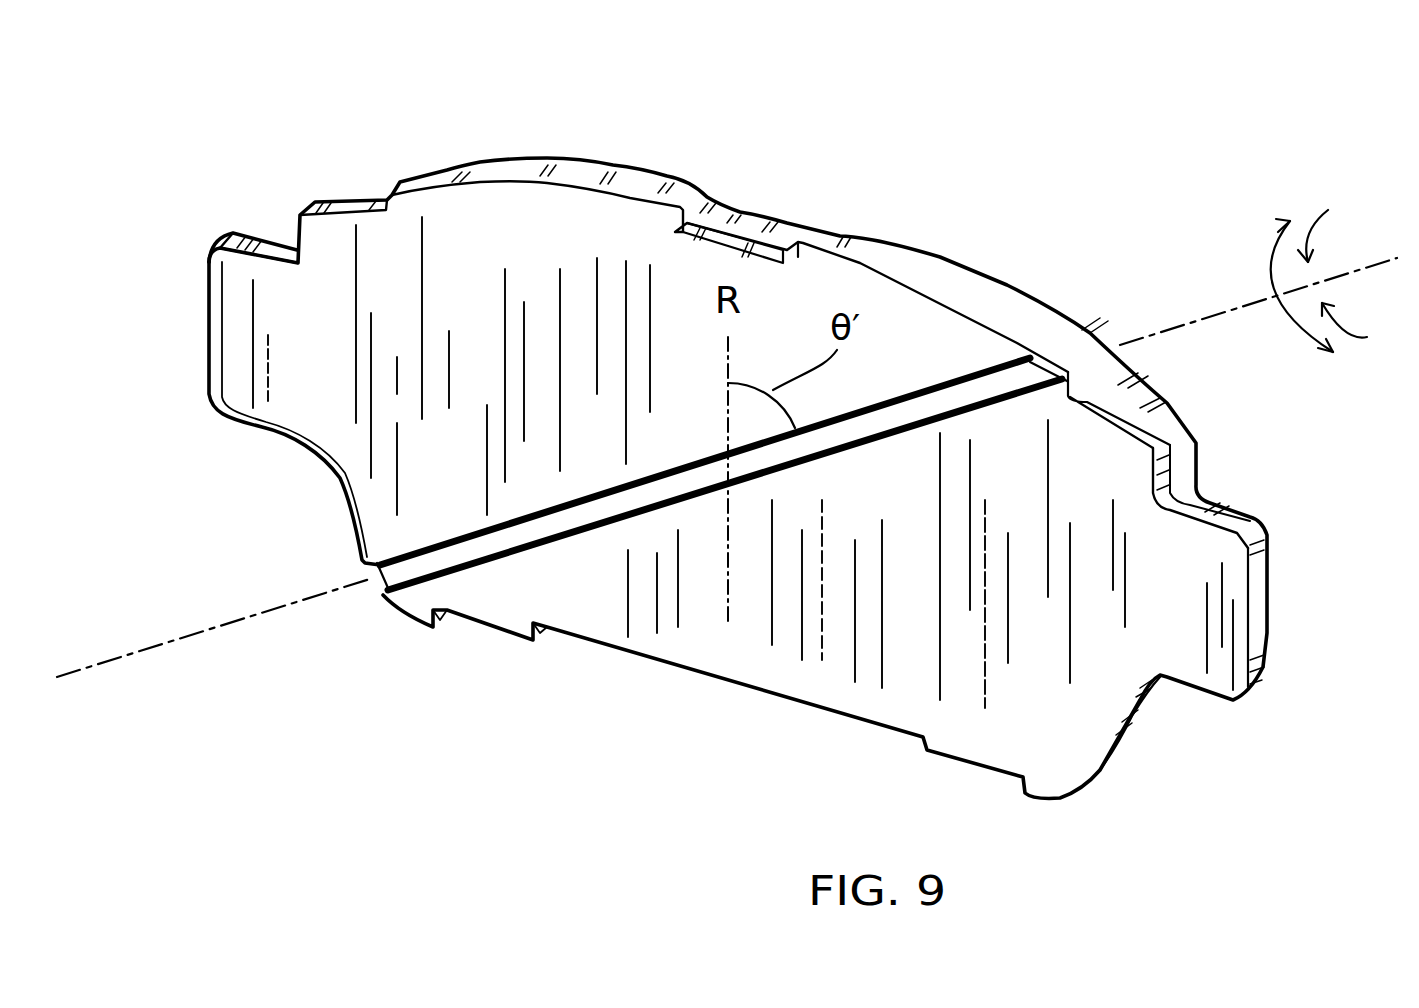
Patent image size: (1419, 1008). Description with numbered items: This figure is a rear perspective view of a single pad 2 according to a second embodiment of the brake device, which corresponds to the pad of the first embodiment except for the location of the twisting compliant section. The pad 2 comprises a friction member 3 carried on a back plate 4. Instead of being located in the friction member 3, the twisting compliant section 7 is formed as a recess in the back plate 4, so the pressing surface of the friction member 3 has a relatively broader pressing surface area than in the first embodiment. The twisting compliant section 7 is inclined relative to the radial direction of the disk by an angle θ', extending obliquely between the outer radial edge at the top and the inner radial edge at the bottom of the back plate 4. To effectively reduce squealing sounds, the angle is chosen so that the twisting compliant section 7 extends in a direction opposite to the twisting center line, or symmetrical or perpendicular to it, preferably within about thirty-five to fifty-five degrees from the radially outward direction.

The pad 2 is at (257, 70).
The friction member 3 is at (437, 173).
The back plate 4 is at (291, 228).
The twisting compliant section 7 is at (557, 522).